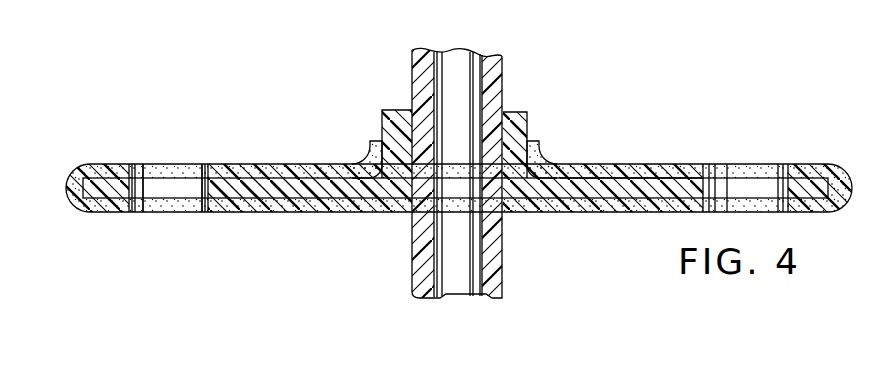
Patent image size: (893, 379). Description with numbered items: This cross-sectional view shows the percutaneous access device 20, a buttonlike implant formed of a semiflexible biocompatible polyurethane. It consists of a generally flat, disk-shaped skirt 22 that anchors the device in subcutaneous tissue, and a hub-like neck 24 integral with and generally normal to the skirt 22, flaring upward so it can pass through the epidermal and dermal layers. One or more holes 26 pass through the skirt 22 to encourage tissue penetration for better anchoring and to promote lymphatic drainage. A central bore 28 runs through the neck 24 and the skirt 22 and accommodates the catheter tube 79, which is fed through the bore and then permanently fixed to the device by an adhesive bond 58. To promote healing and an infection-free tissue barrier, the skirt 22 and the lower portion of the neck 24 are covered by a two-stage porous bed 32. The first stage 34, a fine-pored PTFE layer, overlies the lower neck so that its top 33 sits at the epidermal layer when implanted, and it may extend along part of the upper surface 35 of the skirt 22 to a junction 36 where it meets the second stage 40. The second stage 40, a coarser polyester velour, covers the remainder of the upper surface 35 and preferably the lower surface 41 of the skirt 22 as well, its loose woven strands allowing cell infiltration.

The percutaneous access device 20 is at (442, 173).
The skirt 22 is at (692, 152).
The neck 24 is at (527, 112).
The holes 26 is at (143, 175).
The central bore 28 is at (507, 130).
The two-stage porous bed 32 is at (264, 150).
The top of first stage 33 is at (381, 111).
The first stage 34 is at (357, 164).
The upper surface of skirt 35 is at (638, 172).
The junction 36 is at (317, 177).
The second stage 40 is at (228, 177).
The lower surface of skirt 41 is at (608, 178).
The bond 58 is at (503, 107).
The catheter tube 79 is at (503, 58).